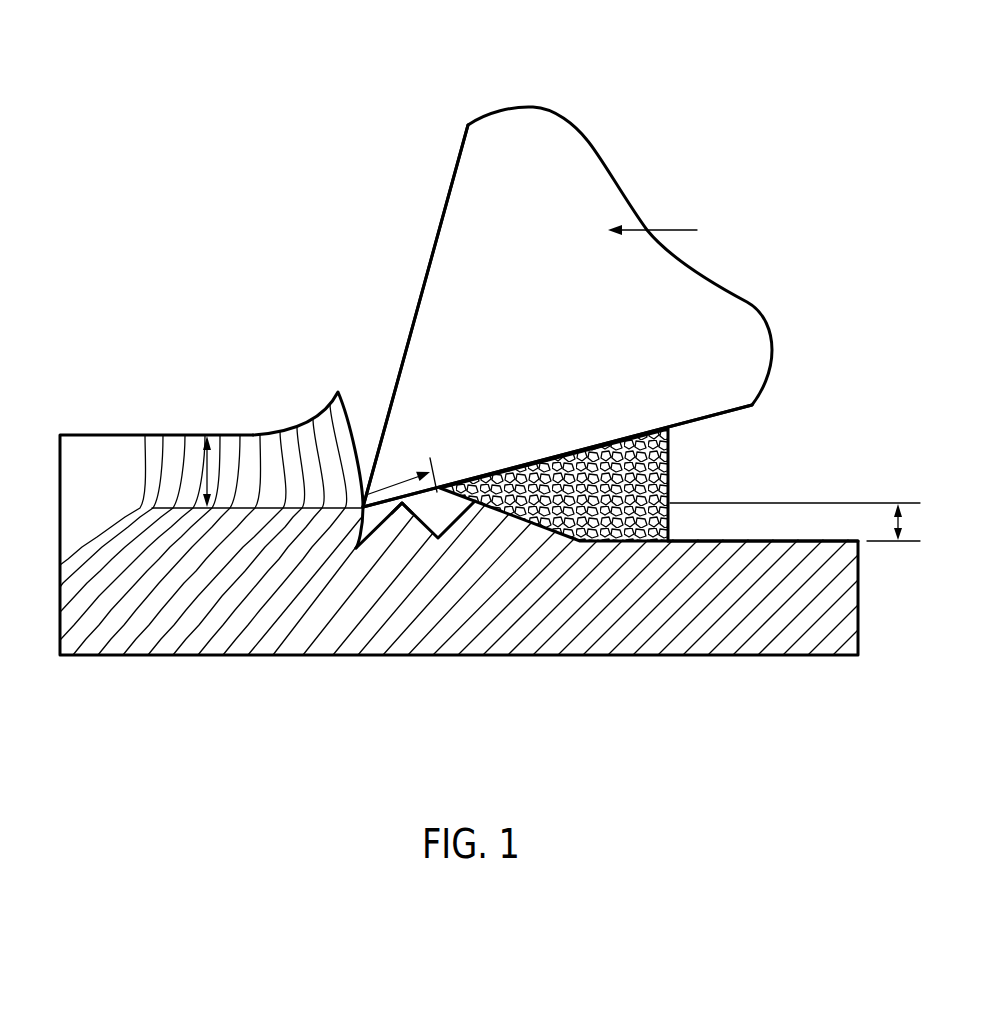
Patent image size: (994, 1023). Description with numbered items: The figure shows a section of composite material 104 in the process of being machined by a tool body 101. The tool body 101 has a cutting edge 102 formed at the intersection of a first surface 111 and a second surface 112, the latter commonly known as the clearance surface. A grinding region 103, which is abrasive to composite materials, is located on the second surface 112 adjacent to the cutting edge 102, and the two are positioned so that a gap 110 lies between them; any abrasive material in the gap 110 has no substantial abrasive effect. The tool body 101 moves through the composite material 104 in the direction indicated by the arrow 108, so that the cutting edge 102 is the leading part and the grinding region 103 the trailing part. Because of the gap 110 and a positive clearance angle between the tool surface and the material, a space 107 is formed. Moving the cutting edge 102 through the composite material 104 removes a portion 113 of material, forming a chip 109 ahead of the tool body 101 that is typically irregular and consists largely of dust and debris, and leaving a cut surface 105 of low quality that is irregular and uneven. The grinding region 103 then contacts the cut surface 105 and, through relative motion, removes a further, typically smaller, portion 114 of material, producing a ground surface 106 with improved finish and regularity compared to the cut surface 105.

The tool body 101 is at (522, 123).
The cutting edge 102 is at (362, 525).
The grinding region 103 is at (567, 453).
The composite material 104 is at (100, 495).
The cut surface 105 is at (420, 502).
The ground surface 106 is at (736, 549).
The space 107 is at (399, 506).
The arrow 108 is at (677, 228).
The chip 109 is at (320, 410).
The gap 110 is at (388, 490).
The first surface 111 is at (442, 218).
The second surface 112 is at (705, 422).
The portion of composite material removed by cutting 113 is at (200, 480).
The portion of material removed by grinding 114 is at (893, 518).